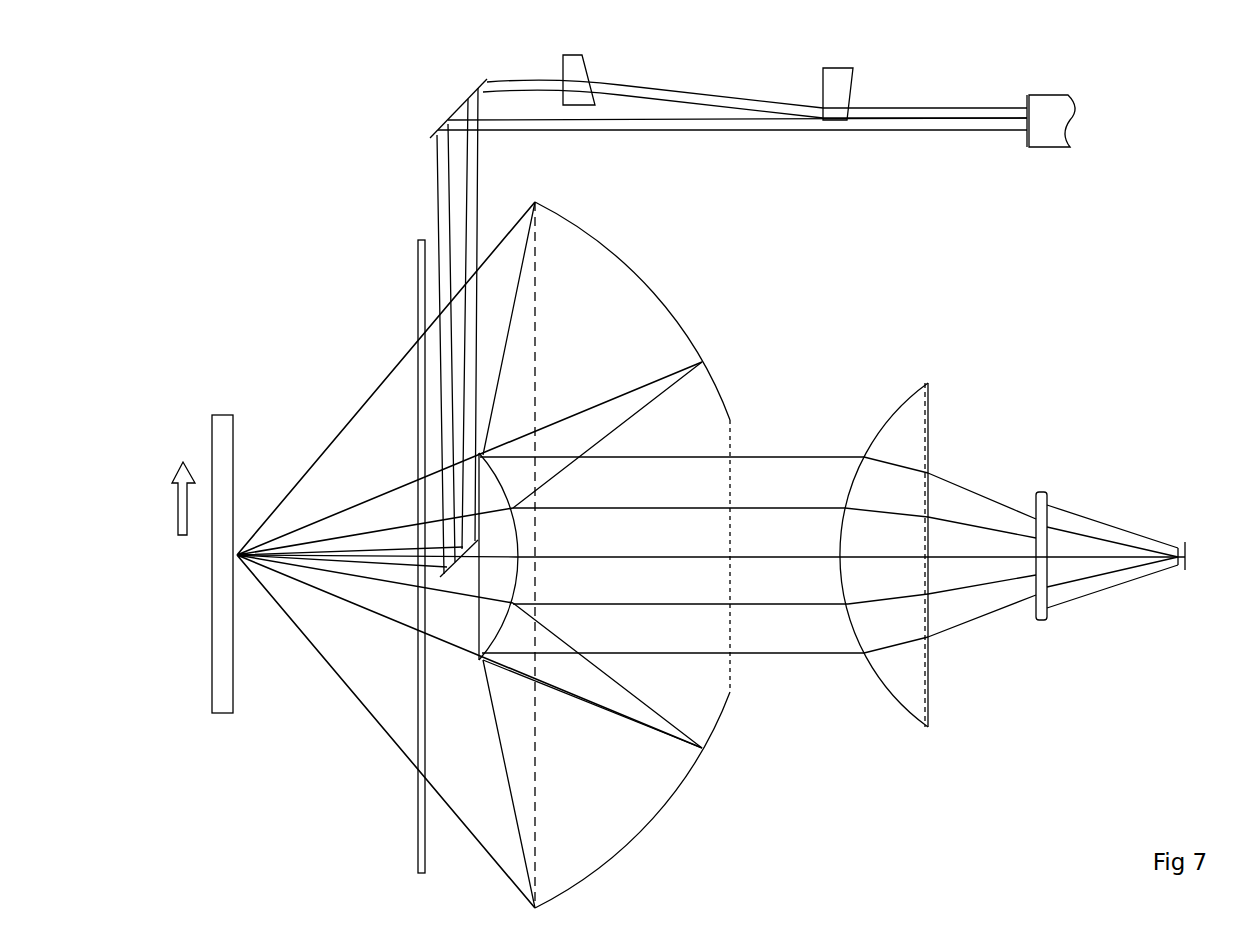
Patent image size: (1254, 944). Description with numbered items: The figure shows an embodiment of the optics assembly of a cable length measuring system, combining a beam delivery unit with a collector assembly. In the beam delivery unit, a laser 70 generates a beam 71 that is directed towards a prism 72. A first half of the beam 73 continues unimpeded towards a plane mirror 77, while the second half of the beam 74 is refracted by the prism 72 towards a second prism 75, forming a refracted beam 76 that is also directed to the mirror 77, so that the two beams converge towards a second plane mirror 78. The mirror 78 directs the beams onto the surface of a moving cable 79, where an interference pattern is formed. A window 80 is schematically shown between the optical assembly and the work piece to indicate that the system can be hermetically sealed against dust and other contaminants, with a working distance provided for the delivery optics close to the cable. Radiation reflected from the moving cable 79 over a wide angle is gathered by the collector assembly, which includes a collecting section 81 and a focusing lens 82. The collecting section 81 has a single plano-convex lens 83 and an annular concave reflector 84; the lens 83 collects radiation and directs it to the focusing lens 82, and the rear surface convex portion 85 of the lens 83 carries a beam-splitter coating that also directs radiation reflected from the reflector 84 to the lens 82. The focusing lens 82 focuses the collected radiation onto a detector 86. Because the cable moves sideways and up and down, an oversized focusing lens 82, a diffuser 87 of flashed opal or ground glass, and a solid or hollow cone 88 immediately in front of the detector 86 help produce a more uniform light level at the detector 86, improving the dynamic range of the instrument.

The laser 70 is at (1085, 125).
The beam 71 is at (970, 124).
The prism 72 is at (858, 68).
The first half of the beam 73 is at (690, 133).
The second half of the beam 74 is at (672, 78).
The second prism 75 is at (590, 62).
The refracted beam 76 is at (508, 79).
The plane mirror 77 is at (438, 118).
The second plane mirror 78 is at (425, 622).
The moving cable 79 is at (220, 552).
The window 80 is at (412, 288).
The collecting section 81 is at (768, 862).
The focusing lens 82 is at (902, 713).
The plano-convex lens 83 is at (472, 658).
The annular concave reflector 84 is at (700, 337).
The rear surface convex portion 85 is at (500, 642).
The detector 86 is at (1195, 545).
The diffuser 87 is at (1041, 485).
The cone 88 is at (1110, 513).